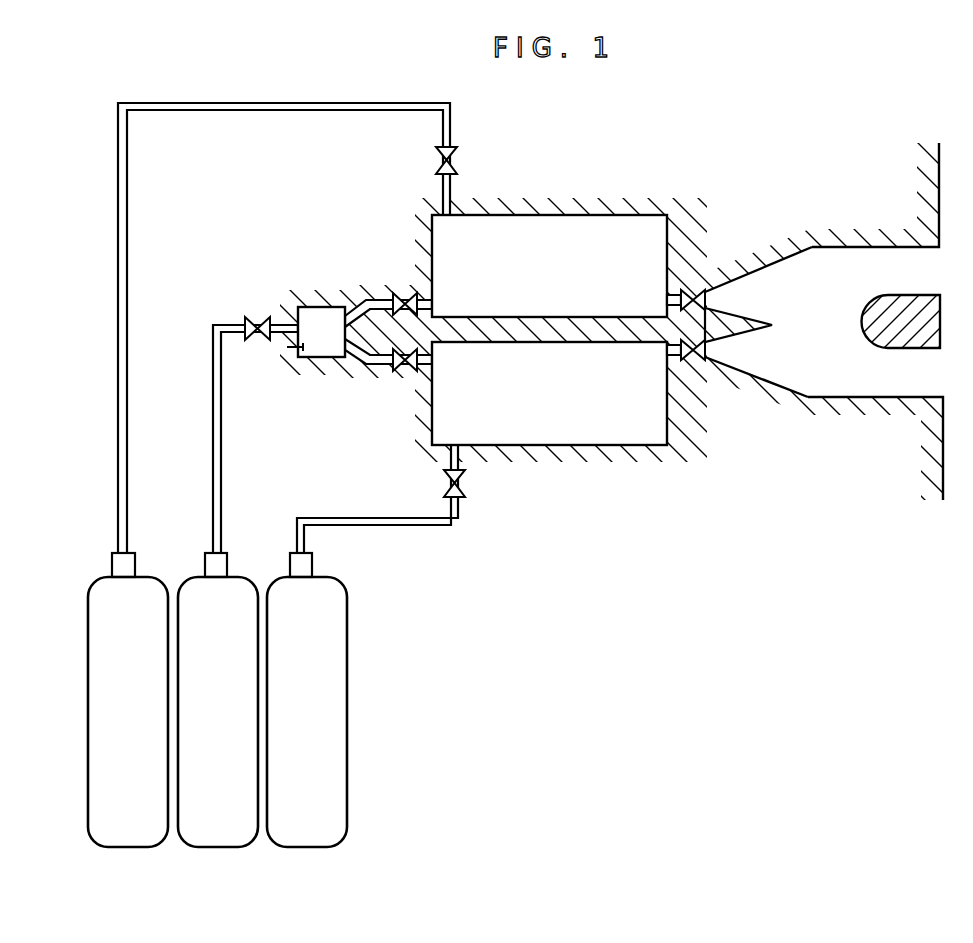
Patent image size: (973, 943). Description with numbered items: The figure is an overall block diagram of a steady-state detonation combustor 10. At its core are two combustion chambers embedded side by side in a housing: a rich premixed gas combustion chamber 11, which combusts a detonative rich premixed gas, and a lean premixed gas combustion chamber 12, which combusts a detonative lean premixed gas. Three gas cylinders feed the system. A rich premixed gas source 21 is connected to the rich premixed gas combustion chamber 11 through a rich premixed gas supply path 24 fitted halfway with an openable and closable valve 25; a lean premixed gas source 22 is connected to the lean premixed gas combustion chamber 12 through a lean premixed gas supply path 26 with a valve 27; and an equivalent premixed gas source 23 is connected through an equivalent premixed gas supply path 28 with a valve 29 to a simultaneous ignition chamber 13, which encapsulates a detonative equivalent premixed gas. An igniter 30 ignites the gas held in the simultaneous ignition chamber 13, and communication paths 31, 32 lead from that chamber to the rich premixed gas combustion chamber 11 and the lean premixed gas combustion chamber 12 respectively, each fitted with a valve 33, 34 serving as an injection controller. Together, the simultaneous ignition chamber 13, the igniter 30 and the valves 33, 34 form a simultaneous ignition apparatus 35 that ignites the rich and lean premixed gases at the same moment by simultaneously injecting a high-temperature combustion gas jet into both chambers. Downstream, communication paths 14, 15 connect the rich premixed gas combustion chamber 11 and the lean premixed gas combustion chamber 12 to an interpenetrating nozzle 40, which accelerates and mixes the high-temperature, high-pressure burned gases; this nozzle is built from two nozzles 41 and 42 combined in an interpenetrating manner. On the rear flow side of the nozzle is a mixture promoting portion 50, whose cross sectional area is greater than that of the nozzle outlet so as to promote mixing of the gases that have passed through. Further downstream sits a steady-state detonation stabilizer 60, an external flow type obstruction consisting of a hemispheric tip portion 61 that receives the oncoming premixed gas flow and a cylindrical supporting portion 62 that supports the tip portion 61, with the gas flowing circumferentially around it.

The steady-state detonation combustor 10 is at (76, 147).
The rich premixed gas combustion chamber 11 is at (545, 232).
The lean premixed gas combustion chamber 12 is at (560, 418).
The simultaneous ignition chamber 13 is at (318, 318).
The communication path 14 is at (687, 288).
The communication path 15 is at (716, 358).
The rich premixed gas source 21 is at (150, 577).
The lean premixed gas source 22 is at (347, 612).
The equivalent premixed gas source 23 is at (240, 577).
The rich premixed gas supply path 24 is at (127, 452).
The valve 25 is at (440, 160).
The lean premixed gas supply path 26 is at (392, 527).
The valve 27 is at (450, 483).
The equivalent premixed gas supply path 28 is at (220, 452).
The valve 29 is at (256, 320).
The igniter 30 is at (290, 347).
The communication path 31 is at (365, 300).
The communication path 32 is at (362, 362).
The valve 33 is at (398, 296).
The valve 34 is at (384, 368).
The simultaneous ignition apparatus 35 is at (328, 290).
The interpenetrating nozzle 40 is at (752, 553).
The nozzle 41 is at (745, 288).
The nozzle 42 is at (738, 356).
The mixture promoting portion 50 is at (815, 410).
The steady-state detonation stabilizer 60 is at (882, 170).
The tip portion 61 is at (857, 315).
The supporting portion 62 is at (893, 294).